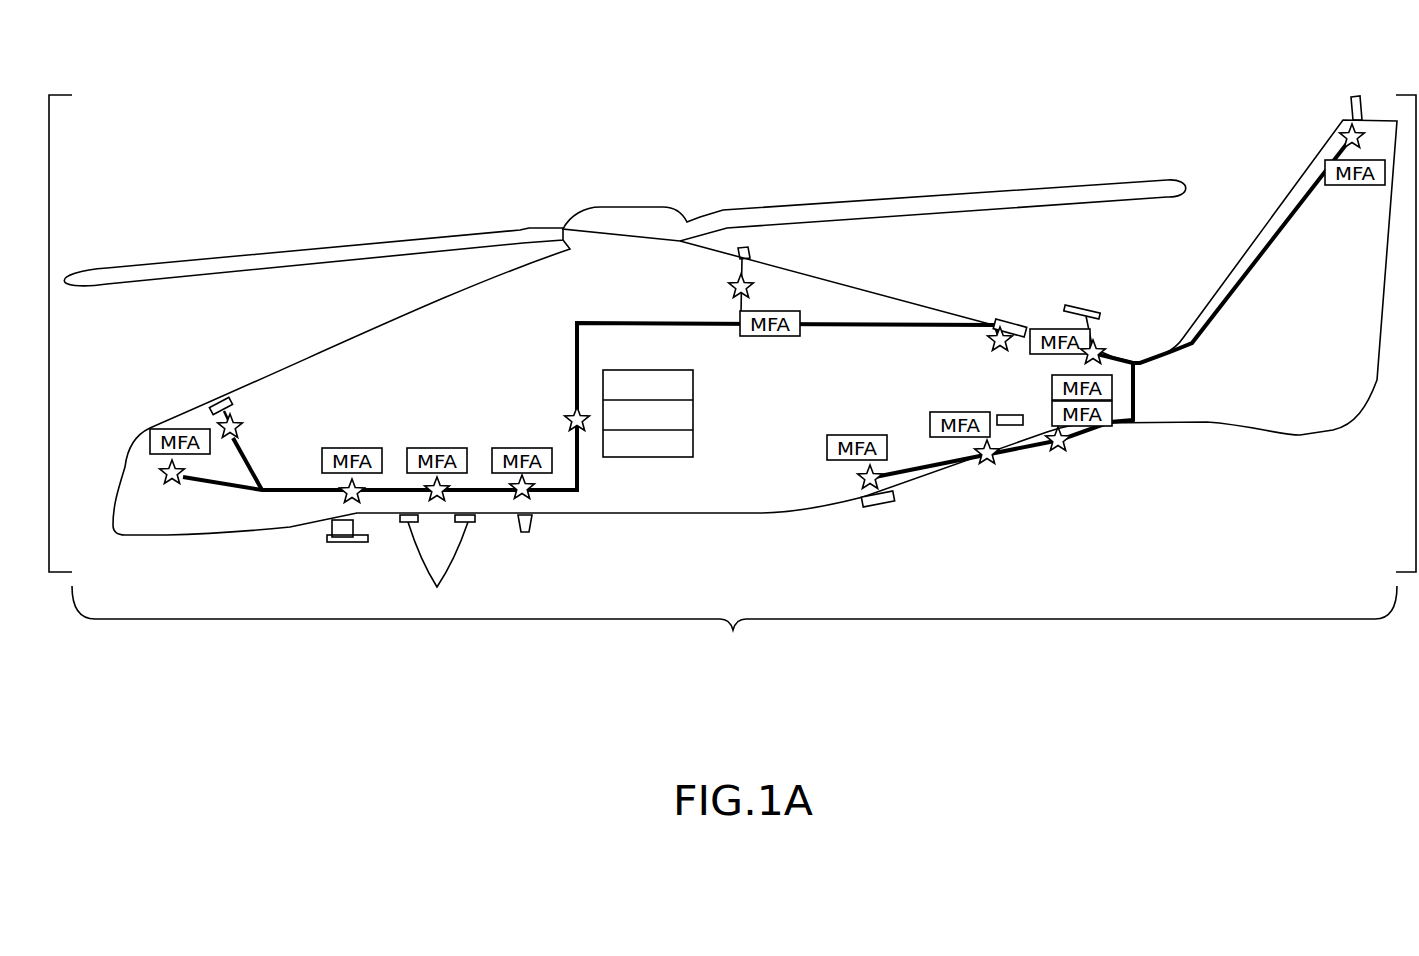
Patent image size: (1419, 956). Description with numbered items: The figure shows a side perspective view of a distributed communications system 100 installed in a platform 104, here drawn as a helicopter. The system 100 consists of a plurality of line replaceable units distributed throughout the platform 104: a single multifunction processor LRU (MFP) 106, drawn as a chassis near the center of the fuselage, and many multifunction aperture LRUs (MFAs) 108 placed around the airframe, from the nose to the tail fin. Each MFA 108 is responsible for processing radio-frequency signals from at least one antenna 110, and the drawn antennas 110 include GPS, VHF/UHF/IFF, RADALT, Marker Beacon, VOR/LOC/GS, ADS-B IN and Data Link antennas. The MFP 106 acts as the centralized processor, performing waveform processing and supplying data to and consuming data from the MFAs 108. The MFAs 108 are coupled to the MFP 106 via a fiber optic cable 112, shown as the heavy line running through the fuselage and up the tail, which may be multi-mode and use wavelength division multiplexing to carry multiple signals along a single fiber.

The system 100 is at (259, 134).
The platform 104 is at (700, 267).
The multifunction processor LRU (MFP) 106 is at (613, 380).
The multifunction aperture LRU (MFA) 108 is at (356, 447).
The antenna 110 is at (748, 253).
The fiber optic cable 112 is at (838, 323).